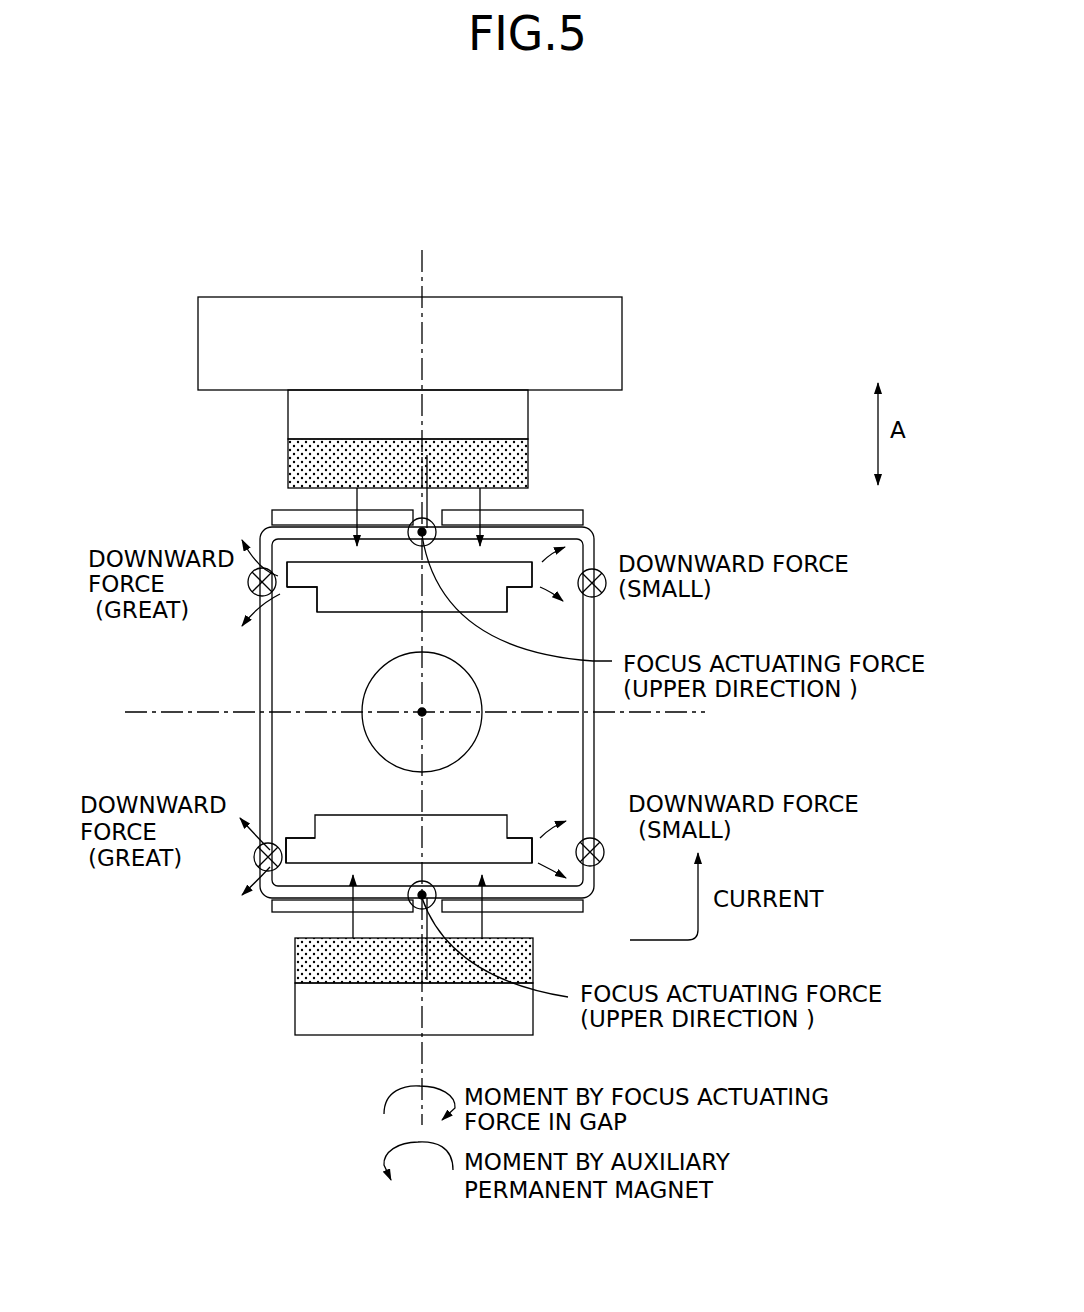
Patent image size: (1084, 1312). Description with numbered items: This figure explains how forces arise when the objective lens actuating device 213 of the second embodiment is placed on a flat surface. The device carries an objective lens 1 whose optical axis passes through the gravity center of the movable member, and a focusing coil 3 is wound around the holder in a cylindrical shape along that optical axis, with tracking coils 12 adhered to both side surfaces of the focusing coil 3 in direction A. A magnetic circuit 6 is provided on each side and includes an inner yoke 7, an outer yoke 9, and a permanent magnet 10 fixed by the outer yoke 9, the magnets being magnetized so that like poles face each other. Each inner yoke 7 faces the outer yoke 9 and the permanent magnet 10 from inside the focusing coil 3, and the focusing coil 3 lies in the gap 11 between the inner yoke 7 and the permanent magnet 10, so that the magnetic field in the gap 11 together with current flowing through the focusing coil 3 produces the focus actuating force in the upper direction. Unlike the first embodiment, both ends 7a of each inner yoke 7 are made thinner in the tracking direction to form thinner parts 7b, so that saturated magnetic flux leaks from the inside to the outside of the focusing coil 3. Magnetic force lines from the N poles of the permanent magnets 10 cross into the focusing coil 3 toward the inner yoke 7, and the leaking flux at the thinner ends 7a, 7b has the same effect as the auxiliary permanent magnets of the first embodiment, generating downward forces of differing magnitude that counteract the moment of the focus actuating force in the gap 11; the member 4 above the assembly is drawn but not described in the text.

The objective lens 1 is at (480, 730).
The focusing coil 3 is at (596, 776).
The lens holder upper member 4 is at (570, 327).
The magnetic circuit 6 is at (398, 744).
The inner yoke 7 is at (376, 598).
The both ends of inner yoke 7a is at (287, 570).
The thinner part 7b is at (310, 580).
The outer yoke 9 is at (530, 414).
The permanent magnet 10 is at (523, 455).
The gap 11 is at (530, 497).
The tracking coil 12 is at (283, 510).
The objective lens actuating device 213 is at (395, 712).